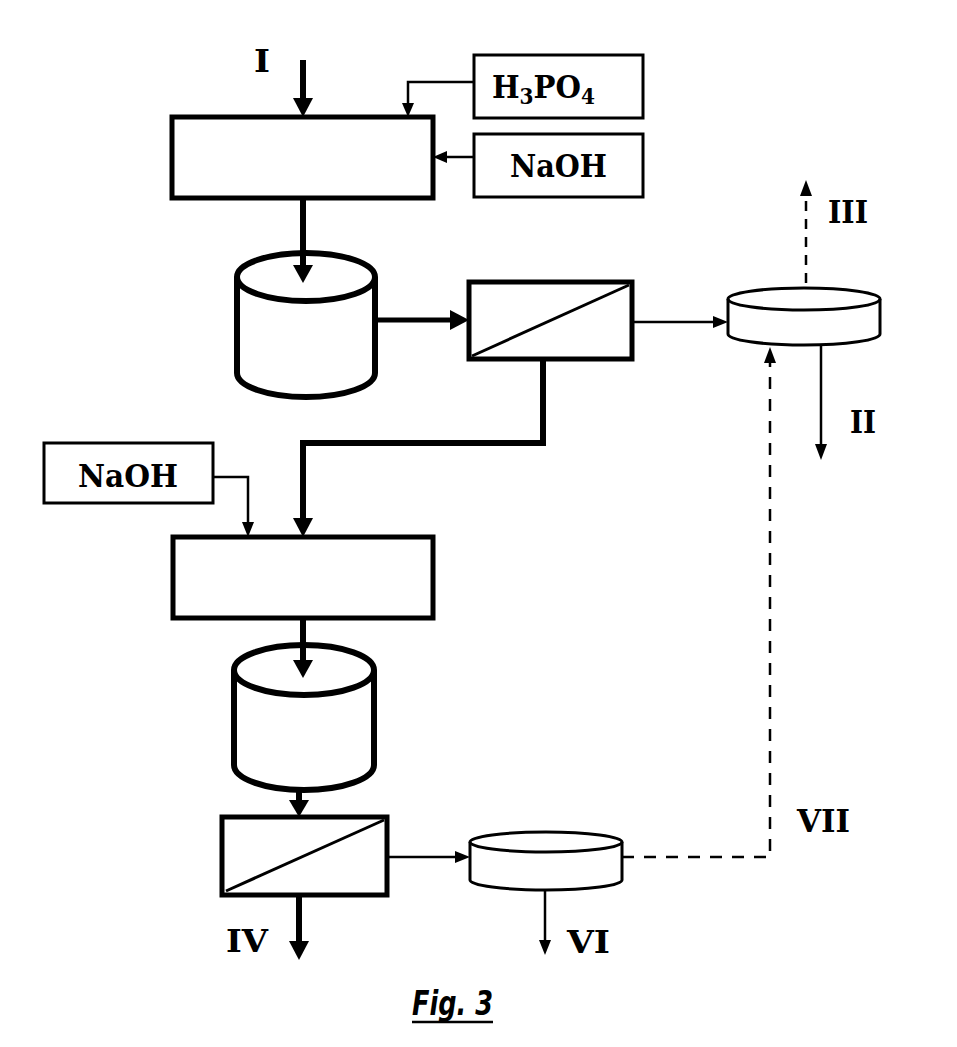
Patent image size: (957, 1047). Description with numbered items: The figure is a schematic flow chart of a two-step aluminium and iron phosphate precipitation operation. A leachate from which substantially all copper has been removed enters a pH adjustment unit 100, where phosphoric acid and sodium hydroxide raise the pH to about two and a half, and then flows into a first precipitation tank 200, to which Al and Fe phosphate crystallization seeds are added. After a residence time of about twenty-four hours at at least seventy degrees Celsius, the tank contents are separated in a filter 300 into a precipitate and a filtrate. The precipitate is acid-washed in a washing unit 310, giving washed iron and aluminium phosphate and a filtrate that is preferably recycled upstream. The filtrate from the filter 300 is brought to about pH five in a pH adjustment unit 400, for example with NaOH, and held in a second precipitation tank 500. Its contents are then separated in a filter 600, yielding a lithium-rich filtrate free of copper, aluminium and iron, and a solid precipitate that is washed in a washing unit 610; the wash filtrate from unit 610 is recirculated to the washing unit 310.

The pH adjustment unit 100 is at (302, 157).
The first precipitation tank 200 is at (306, 325).
The filter 300 is at (550, 320).
The washing unit 310 is at (804, 316).
The pH adjustment unit 400 is at (303, 577).
The second precipitation tank 500 is at (304, 717).
The filter 600 is at (304, 856).
The washing unit 610 is at (546, 861).